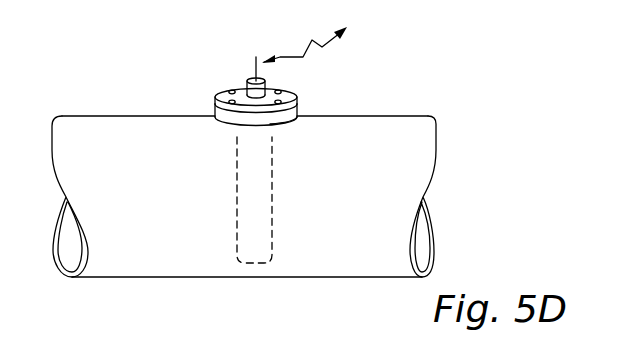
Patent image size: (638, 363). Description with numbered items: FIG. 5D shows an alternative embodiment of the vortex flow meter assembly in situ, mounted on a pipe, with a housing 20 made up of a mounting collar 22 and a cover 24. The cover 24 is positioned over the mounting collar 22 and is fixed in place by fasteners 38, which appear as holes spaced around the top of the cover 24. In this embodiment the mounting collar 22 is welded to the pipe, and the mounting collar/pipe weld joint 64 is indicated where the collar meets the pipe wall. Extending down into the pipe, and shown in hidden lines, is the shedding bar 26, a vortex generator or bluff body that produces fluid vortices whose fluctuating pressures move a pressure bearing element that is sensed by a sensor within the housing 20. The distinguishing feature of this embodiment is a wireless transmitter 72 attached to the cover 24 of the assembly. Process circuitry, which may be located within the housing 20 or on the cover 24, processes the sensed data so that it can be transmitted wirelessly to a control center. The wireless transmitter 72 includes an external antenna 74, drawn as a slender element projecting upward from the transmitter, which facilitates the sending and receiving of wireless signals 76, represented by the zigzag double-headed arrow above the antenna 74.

The housing 20 is at (197, 100).
The mounting collar 22 is at (222, 128).
The cover 24 is at (300, 89).
The shedding bar 26 is at (273, 200).
The fasteners 38 is at (229, 91).
The mounting collar/pipe weld joint 64 is at (282, 128).
The wireless transmitter 72 is at (266, 84).
The external antenna 74 is at (254, 71).
The wireless signals 76 is at (304, 39).